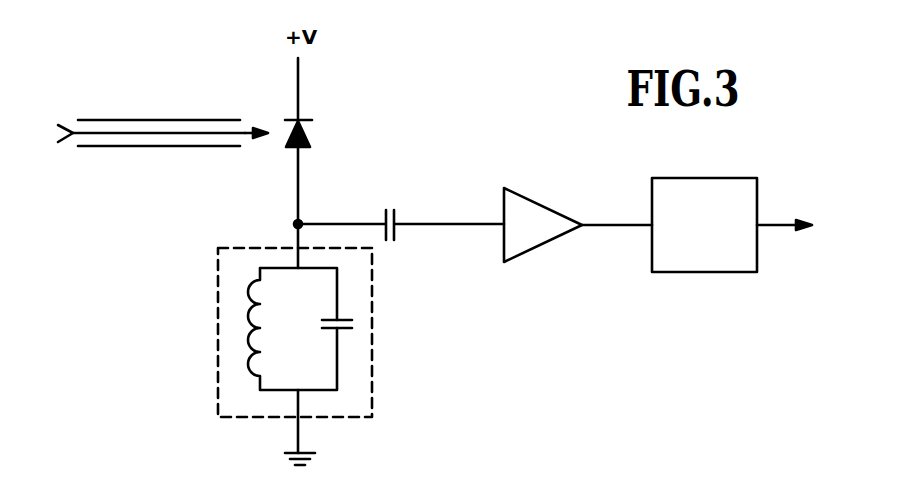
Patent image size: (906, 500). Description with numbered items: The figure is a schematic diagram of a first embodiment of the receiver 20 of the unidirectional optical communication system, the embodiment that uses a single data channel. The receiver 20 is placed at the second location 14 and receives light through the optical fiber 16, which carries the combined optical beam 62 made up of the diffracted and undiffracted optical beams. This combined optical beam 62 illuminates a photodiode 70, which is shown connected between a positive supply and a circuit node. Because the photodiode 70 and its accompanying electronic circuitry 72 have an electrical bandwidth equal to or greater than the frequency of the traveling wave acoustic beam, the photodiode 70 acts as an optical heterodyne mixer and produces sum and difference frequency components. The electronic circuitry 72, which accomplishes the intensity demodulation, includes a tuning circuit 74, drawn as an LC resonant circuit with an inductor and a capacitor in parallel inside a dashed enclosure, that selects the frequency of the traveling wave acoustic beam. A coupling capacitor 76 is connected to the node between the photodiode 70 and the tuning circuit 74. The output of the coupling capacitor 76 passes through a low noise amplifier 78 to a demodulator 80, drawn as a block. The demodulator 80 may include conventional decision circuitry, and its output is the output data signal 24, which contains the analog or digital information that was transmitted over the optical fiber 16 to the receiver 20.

The second location 14 is at (540, 89).
The optical fiber 16 is at (160, 147).
The receiver 20 is at (515, 300).
The output data signal 24 is at (782, 222).
The combined optical beam 62 is at (246, 130).
The photodiode 70 is at (307, 130).
The electronic circuitry 72 is at (170, 287).
The tuning circuit 74 is at (372, 415).
The coupling capacitor 76 is at (401, 199).
The low noise amplifier 78 is at (504, 188).
The demodulator 80 is at (705, 273).